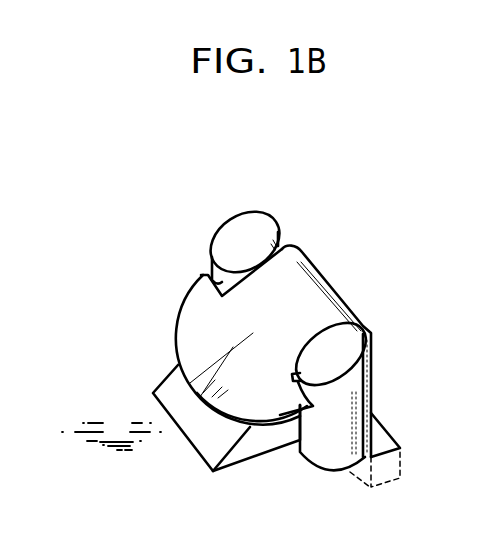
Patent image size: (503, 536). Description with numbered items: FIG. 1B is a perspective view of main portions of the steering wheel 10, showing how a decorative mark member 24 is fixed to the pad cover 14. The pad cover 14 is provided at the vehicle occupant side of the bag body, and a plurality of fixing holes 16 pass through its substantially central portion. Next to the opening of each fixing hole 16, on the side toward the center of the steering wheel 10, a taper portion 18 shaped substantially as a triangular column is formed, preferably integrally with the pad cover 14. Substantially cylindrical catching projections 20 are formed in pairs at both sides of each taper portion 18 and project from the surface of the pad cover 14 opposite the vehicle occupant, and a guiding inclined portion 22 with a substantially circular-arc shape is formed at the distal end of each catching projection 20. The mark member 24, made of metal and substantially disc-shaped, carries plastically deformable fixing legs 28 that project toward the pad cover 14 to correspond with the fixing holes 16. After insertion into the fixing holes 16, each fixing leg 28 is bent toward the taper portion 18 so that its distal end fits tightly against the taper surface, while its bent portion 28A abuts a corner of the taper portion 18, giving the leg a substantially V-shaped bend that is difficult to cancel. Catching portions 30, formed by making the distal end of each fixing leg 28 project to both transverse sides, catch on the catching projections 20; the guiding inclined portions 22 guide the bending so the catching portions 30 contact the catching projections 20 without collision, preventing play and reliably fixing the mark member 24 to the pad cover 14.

The steering wheel 10 is at (290, 181).
The pad cover 14 is at (122, 433).
The fixing hole 16 is at (390, 437).
The taper portion 18 is at (210, 447).
The catching projection 20 is at (212, 255).
The guiding inclined portion 22 is at (229, 233).
The mark member 24 is at (318, 262).
The fixing leg 28 is at (300, 327).
The bent portion 28A is at (330, 288).
The catching portion 30 is at (203, 292).